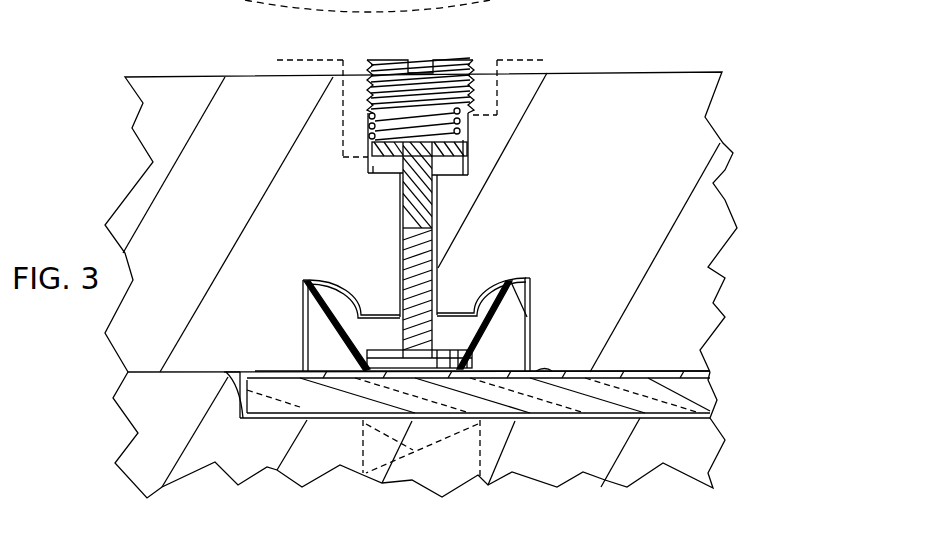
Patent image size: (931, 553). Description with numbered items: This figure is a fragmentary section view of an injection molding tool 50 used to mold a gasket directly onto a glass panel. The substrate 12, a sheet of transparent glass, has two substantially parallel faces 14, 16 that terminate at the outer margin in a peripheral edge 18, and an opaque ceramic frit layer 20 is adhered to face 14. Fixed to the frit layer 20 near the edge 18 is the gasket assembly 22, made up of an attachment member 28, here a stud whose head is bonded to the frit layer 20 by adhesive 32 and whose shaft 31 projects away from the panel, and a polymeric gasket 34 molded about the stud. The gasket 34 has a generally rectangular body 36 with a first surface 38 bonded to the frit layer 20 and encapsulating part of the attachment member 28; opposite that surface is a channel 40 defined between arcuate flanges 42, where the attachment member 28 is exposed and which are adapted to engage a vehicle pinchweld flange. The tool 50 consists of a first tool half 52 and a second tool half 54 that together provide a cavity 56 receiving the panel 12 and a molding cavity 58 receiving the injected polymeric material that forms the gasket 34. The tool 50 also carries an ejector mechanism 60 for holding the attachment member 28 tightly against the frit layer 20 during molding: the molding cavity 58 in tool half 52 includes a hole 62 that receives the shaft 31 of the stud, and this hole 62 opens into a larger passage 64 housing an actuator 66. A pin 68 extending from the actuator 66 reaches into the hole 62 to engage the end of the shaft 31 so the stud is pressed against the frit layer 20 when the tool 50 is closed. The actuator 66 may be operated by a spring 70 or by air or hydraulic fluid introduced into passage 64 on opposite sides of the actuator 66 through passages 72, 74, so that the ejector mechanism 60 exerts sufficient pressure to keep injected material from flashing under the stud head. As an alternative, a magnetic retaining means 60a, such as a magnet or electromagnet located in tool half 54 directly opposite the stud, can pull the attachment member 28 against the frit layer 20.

The substrate 12 is at (702, 389).
The face 14 is at (668, 370).
The face 16 is at (590, 418).
The peripheral edge 18 is at (226, 370).
The ceramic frit layer 20 is at (632, 370).
The gasket assembly 22 is at (419, 294).
The attachment member 28 is at (450, 276).
The shaft 31 is at (420, 258).
The adhesive 32 is at (367, 367).
The gasket 34 is at (298, 309).
The body 36 is at (447, 326).
The first surface 38 is at (535, 371).
The channel 40 is at (372, 316).
The arcuate flanges 42 is at (522, 307).
The injection molding tool 50 is at (703, 44).
The first tool half 52 is at (690, 134).
The second tool half 54 is at (707, 436).
The cavity 56 is at (243, 420).
The molding cavity 58 is at (538, 295).
The ejector mechanism 60 is at (424, 141).
The magnetic retaining means 60a is at (363, 443).
The hole 62 is at (440, 240).
The passage 64 is at (372, 172).
The actuator 66 is at (367, 125).
The pin 68 is at (470, 176).
The spring 70 is at (473, 103).
The passage 72 is at (523, 82).
The passage 74 is at (309, 103).